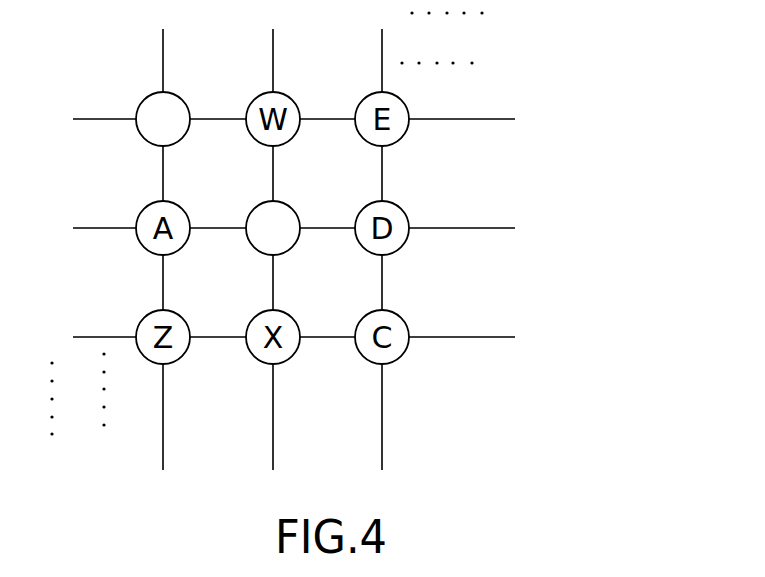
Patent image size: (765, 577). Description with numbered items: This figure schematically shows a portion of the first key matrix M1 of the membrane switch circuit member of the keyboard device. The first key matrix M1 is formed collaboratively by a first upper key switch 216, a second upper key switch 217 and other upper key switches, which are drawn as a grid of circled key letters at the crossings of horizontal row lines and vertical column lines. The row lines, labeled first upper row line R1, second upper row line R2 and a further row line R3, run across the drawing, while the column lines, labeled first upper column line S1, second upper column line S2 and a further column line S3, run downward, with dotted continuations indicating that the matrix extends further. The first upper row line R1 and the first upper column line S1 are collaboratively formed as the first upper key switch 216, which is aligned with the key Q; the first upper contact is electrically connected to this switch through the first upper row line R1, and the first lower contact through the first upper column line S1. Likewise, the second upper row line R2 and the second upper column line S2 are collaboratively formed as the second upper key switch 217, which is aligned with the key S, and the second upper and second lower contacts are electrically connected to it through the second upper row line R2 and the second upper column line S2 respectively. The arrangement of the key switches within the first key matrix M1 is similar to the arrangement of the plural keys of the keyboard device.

The first upper key switch 216 is at (154, 100).
The second upper key switch 217 is at (282, 210).
The first key matrix M1 is at (540, 70).
The first upper row line R1 is at (275, 118).
The second upper row line R2 is at (275, 227).
The row line R3 is at (275, 336).
The first upper column line S1 is at (162, 235).
The second upper column line S2 is at (272, 235).
The column line S3 is at (381, 235).